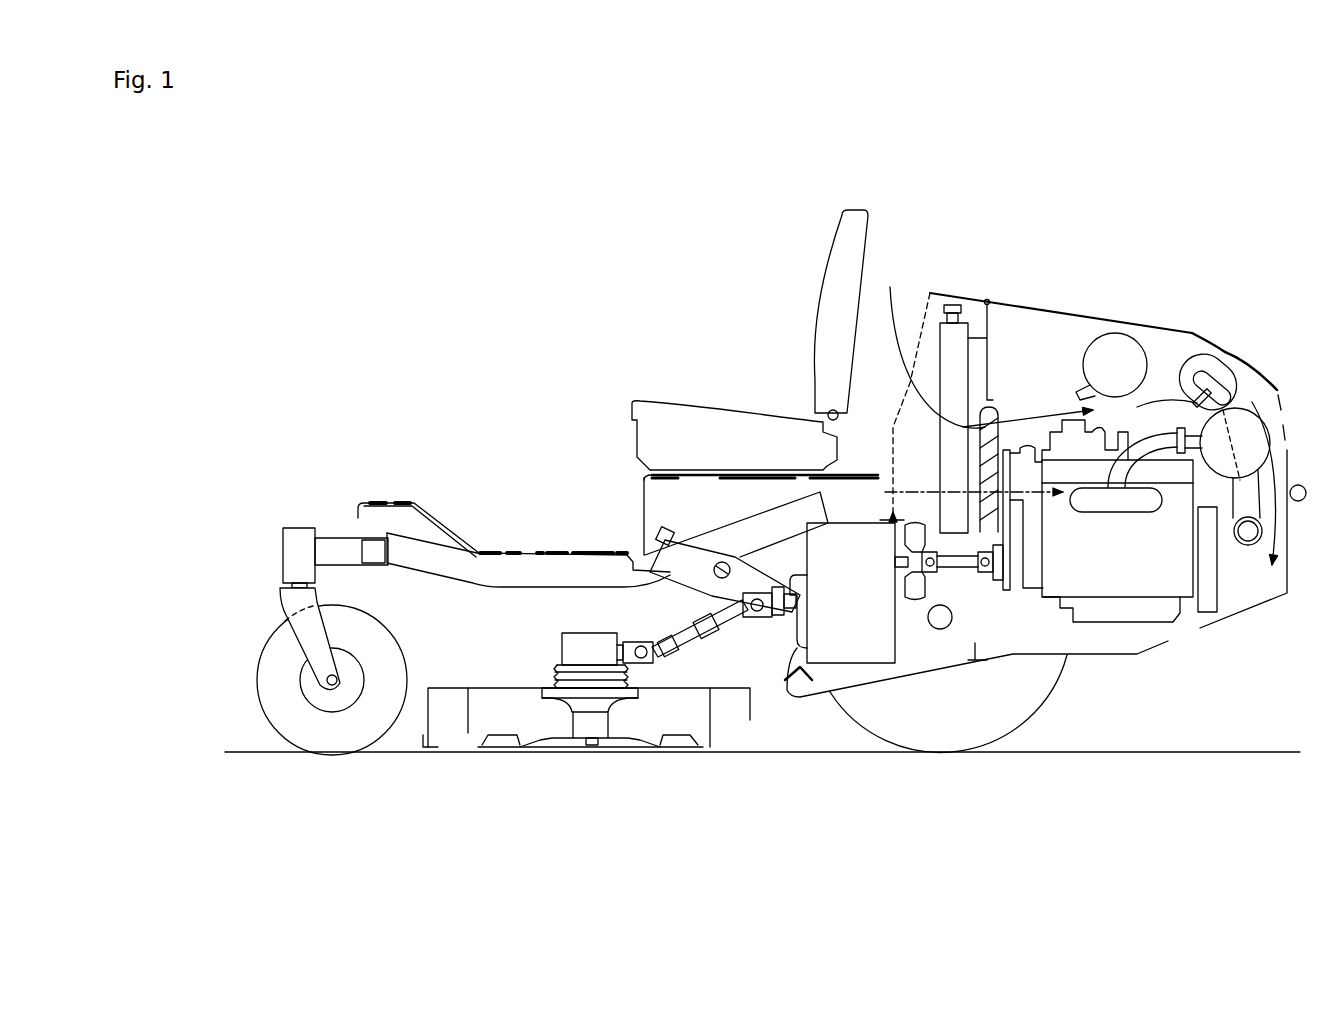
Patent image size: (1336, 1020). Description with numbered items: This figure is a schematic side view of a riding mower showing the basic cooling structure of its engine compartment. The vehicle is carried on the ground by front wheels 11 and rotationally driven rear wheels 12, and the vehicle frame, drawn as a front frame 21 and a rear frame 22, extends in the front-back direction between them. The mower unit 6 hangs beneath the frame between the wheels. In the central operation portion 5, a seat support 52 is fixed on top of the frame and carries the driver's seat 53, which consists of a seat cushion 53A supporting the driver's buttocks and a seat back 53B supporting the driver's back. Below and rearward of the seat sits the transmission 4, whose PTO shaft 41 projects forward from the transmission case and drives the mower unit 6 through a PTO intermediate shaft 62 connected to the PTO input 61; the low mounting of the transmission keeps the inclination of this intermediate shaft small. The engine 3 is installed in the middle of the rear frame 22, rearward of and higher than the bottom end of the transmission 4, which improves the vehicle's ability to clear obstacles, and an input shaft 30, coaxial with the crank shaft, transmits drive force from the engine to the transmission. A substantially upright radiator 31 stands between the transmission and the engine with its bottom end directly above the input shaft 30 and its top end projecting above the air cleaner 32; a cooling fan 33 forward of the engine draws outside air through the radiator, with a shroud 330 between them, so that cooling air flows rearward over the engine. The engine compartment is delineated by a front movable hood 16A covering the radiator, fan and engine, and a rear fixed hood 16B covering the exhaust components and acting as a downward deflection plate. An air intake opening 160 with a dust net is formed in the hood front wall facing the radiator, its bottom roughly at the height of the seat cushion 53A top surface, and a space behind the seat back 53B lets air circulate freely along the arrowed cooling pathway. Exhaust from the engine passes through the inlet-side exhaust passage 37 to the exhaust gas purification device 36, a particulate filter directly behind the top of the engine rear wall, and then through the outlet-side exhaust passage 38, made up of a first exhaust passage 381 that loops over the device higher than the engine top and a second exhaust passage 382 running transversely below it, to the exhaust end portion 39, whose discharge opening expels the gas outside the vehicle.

The operation portion 5 is at (578, 280).
The front wheels 11 is at (330, 751).
The rear wheels 12 is at (936, 746).
The front frame 21 is at (495, 584).
The rear frame 22 is at (1023, 646).
The mower unit 6 is at (481, 673).
The PTO input 61 is at (596, 633).
The PTO intermediate shaft 62 is at (711, 626).
The PTO shaft 41 is at (784, 613).
The transmission 4 is at (860, 651).
The input shaft 30 is at (955, 571).
The engine 3 is at (1110, 590).
The inlet-side exhaust passage 37 is at (1122, 479).
The air cleaner 32 is at (1122, 342).
The cooling fan 33 is at (997, 408).
The shroud 330 is at (990, 358).
The radiator 31 is at (952, 327).
The movable hood 16A is at (1048, 308).
The fixed hood 16B is at (1220, 352).
The outlet-side exhaust passage 38 is at (1183, 352).
The first exhaust passage 381 is at (1212, 375).
The second exhaust passage 382 is at (1242, 511).
The exhaust gas purification device 36 is at (1258, 428).
The exhaust end portion 39 is at (1243, 556).
The seat support 52 is at (640, 508).
The driver's seat 53 is at (887, 214).
The seat cushion 53A is at (705, 419).
The seat back 53B is at (830, 299).
The air intake opening 160 is at (897, 376).